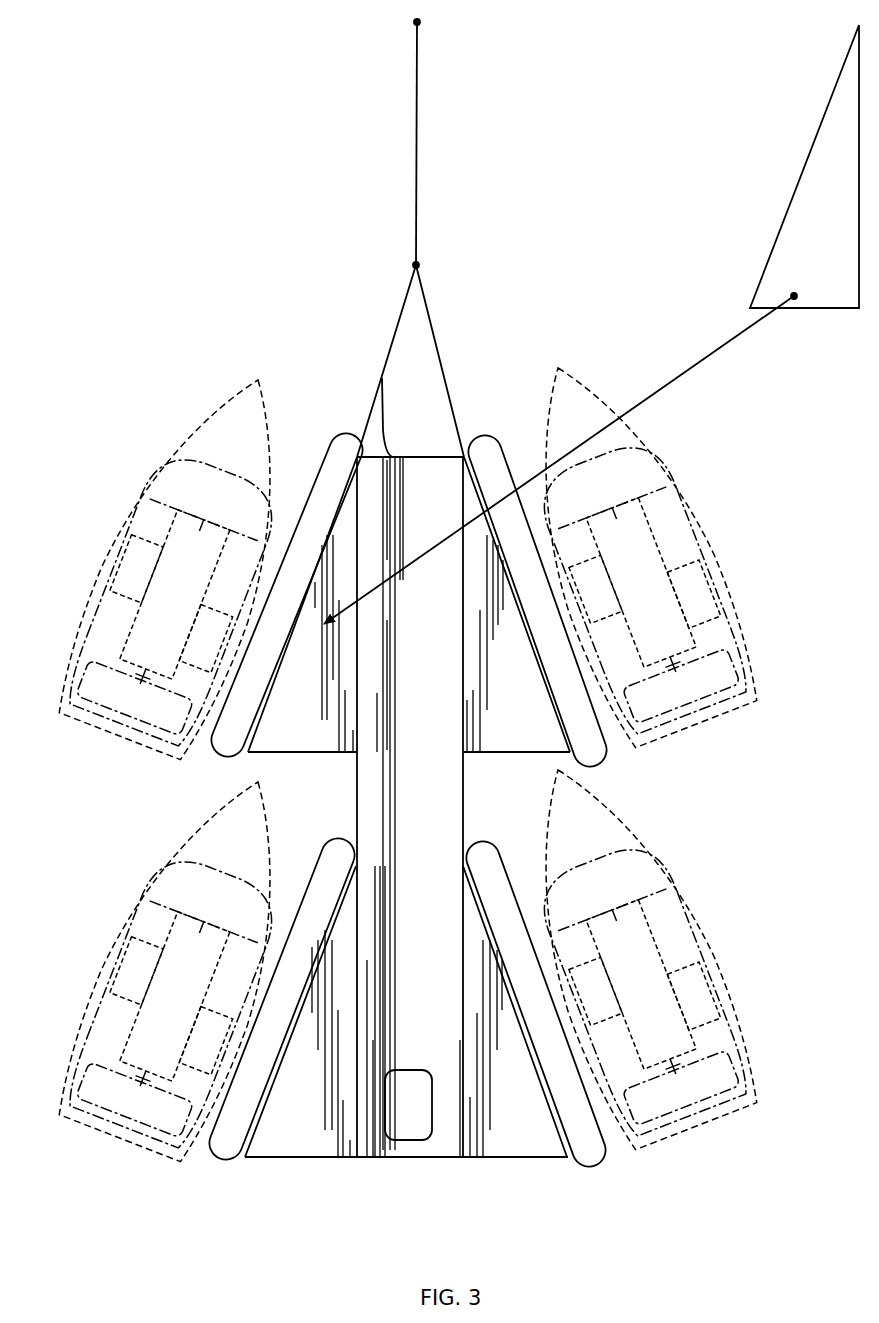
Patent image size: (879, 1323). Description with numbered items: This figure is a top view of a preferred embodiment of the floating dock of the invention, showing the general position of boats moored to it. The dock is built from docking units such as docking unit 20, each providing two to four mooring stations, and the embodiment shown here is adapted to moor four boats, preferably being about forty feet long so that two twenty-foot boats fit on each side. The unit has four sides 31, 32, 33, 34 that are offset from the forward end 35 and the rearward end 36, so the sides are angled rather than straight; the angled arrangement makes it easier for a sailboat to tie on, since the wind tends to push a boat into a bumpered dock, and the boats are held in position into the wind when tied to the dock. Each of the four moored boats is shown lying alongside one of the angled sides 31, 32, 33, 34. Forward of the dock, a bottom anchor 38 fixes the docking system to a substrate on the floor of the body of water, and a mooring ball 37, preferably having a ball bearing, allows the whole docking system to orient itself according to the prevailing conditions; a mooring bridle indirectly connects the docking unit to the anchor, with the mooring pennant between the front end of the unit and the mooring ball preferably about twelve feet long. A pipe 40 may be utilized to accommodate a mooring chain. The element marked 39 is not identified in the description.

The docking unit 20 is at (440, 1178).
The side 31 is at (342, 436).
The side 32 is at (486, 443).
The side 33 is at (586, 1160).
The side 34 is at (228, 1160).
The forward end 35 is at (382, 378).
The rearward end 36 is at (462, 1140).
The mooring ball 37 is at (416, 265).
The bottom anchor 38 is at (417, 24).
The sail 39 is at (445, 368).
The pipe 40 is at (333, 487).